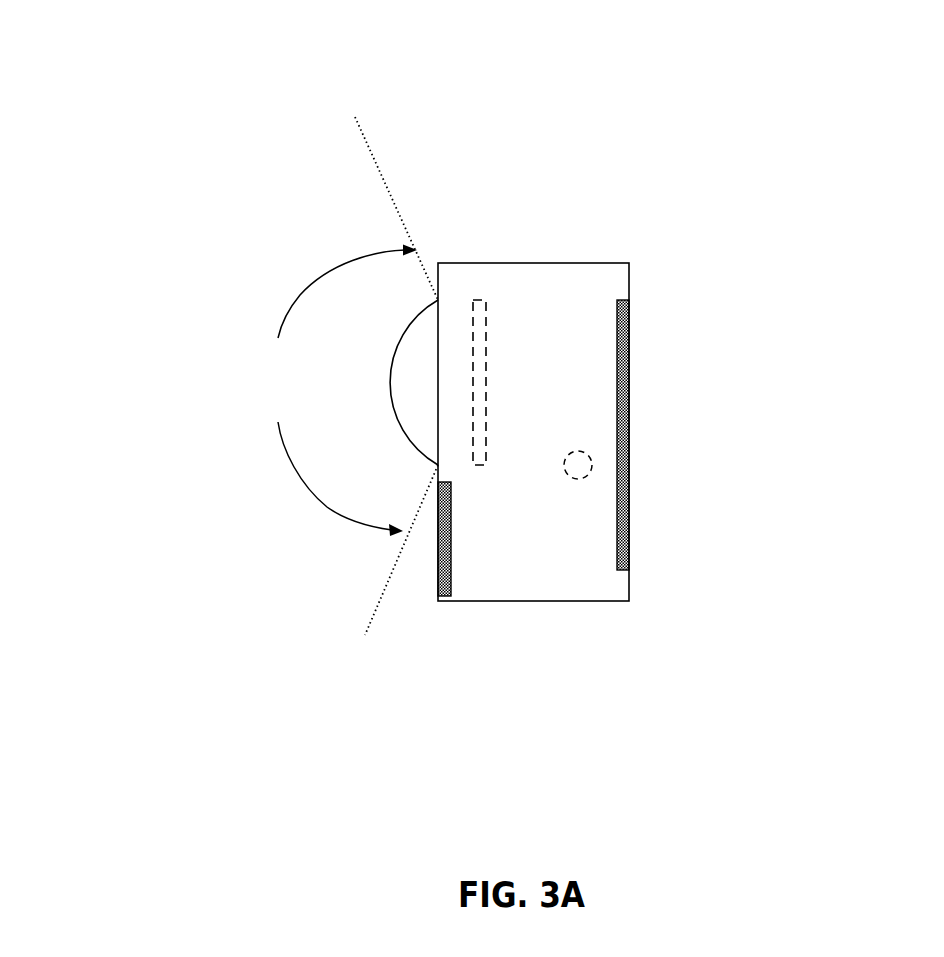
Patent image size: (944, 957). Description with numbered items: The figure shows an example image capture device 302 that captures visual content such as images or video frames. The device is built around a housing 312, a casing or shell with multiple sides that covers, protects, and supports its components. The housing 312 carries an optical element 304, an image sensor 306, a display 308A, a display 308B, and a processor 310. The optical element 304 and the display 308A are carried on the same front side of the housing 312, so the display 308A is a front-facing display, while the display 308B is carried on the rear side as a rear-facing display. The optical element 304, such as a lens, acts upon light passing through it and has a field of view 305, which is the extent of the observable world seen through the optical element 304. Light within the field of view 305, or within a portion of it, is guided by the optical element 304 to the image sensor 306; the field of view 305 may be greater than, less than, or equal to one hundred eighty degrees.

The image capture device 302 is at (596, 122).
The optical element 304 is at (436, 462).
The field of view 305 is at (310, 376).
The image sensor 306 is at (482, 300).
The display 308A is at (443, 601).
The display 308B is at (630, 388).
The processor 310 is at (573, 482).
The housing 312 is at (500, 601).